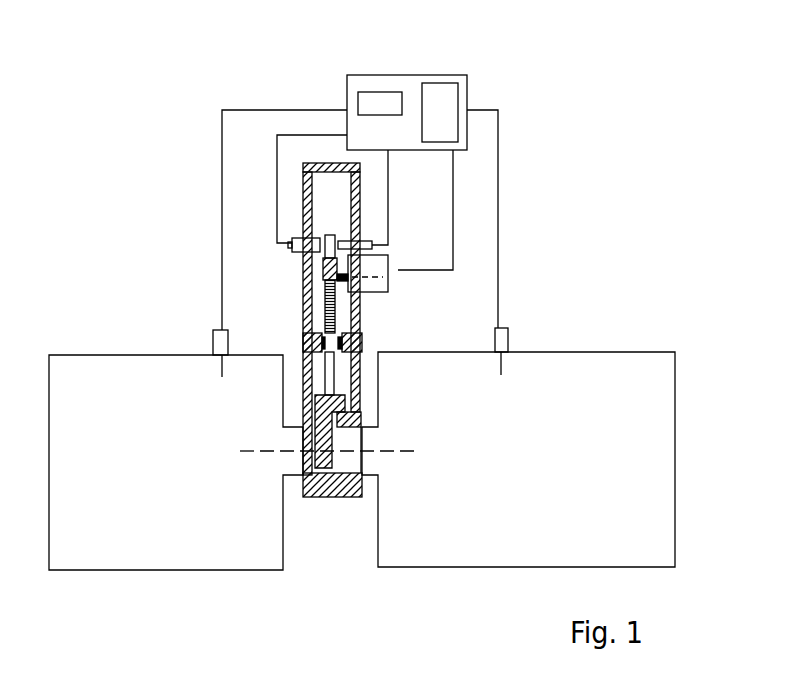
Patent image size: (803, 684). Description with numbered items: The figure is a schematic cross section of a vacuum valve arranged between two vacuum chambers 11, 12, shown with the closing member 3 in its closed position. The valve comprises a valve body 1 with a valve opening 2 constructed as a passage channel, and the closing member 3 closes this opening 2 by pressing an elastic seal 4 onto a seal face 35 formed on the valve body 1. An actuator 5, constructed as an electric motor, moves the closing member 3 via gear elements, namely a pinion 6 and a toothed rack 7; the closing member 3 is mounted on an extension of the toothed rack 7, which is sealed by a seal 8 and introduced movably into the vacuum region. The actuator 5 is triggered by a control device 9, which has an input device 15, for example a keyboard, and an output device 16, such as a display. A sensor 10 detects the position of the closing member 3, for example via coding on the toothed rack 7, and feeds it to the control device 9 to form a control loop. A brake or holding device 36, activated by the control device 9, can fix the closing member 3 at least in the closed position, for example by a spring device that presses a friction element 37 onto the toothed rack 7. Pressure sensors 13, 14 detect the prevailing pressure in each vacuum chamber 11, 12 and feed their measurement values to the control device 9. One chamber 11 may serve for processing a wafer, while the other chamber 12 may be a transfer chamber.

The valve body 1 is at (315, 497).
The valve opening 2 is at (353, 497).
The closing member 3 is at (345, 463).
The elastic seal 4 is at (343, 412).
The actuator 5 is at (396, 264).
The pinion 6 is at (306, 270).
The toothed rack 7 is at (325, 300).
The seal 8 is at (352, 340).
The control device 9 is at (491, 73).
The sensor 10 is at (338, 241).
The vacuum chamber 11 is at (157, 377).
The vacuum chamber 12 is at (597, 362).
The pressure sensor 13 is at (222, 368).
The pressure sensor 14 is at (505, 363).
The input device 15 is at (437, 102).
The output device 16 is at (385, 103).
The seal face 35 is at (337, 497).
The holding device 36 is at (304, 260).
The friction element 37 is at (297, 240).